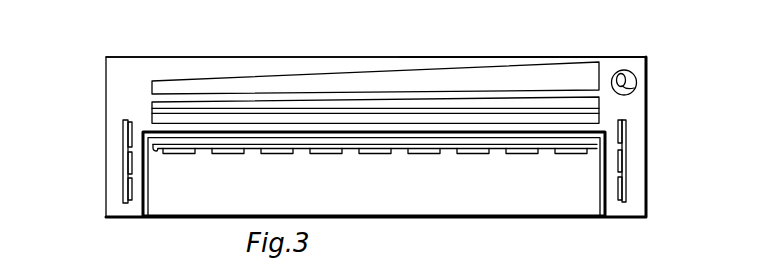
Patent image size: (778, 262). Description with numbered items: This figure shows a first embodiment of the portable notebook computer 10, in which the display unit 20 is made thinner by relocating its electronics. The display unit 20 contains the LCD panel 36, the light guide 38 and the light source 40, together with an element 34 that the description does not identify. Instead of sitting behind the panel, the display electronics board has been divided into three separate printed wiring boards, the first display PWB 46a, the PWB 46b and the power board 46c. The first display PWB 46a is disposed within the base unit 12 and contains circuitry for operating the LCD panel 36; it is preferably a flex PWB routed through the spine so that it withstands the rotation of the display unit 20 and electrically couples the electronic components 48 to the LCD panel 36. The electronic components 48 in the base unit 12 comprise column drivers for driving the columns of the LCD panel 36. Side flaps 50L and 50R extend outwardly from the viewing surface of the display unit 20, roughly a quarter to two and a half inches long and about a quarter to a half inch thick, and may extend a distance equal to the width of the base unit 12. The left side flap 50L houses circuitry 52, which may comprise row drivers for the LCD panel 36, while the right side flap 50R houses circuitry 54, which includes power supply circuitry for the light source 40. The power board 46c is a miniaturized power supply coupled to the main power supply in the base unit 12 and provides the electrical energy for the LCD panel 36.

The portable notebook computer 10 is at (137, 0).
The base unit 12 is at (432, 206).
The display unit 20 is at (220, 57).
The cover 34 is at (545, 57).
The LCD panel 36 is at (153, 102).
The light guide 38 is at (303, 83).
The light source 40 is at (636, 88).
The first display PWB 46a is at (153, 150).
The second display PWB 46b is at (123, 121).
The power board 46c is at (626, 140).
The electronic components 48 is at (268, 150).
The left side flap 50L is at (117, 196).
The right side flap 50R is at (635, 197).
The circuitry 52 is at (132, 187).
The circuitry 54 is at (618, 183).